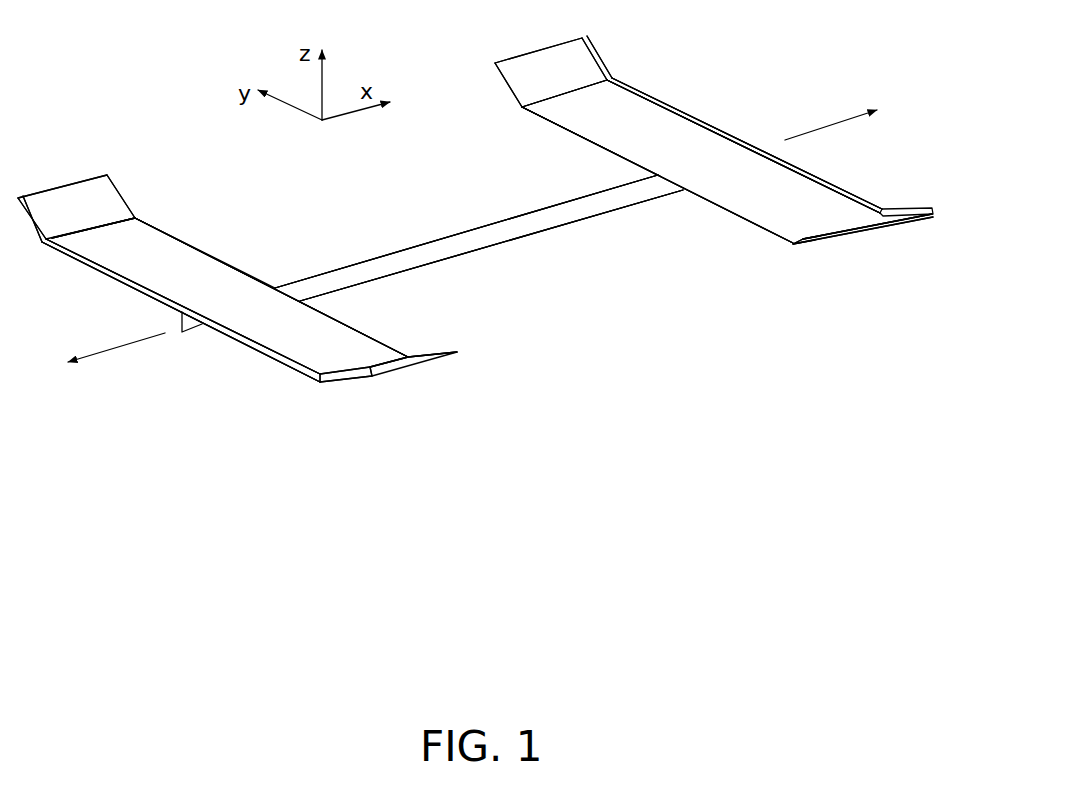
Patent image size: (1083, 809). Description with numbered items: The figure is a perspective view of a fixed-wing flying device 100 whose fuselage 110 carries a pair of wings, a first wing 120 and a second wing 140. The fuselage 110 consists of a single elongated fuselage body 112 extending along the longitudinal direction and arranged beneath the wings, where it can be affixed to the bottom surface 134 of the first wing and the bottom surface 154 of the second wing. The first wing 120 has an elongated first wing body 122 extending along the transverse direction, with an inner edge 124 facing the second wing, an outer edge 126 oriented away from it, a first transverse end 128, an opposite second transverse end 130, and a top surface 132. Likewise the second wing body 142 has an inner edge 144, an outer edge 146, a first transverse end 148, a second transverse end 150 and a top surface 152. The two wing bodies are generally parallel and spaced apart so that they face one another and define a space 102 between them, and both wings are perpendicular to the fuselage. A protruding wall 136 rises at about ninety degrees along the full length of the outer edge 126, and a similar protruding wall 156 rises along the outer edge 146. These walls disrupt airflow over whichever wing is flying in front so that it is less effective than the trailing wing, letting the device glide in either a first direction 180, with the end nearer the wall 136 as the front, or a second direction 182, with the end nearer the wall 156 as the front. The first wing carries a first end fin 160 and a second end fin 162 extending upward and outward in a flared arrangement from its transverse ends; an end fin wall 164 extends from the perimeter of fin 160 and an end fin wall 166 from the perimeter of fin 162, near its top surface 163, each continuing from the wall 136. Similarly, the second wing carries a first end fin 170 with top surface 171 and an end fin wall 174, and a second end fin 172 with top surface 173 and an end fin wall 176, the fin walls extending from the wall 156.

The flying device 100 is at (696, 35).
The space 102 is at (552, 285).
The fuselage 110 is at (487, 220).
The fuselage body 112 is at (421, 246).
The first wing 120 is at (266, 367).
The first wing body 122 is at (345, 309).
The inner edge 124 is at (218, 254).
The outer edge 126 is at (133, 292).
The first transverse end 128 is at (113, 222).
The second transverse end 130 is at (384, 353).
The top surface 132 is at (160, 237).
The bottom surface 134 is at (237, 343).
The protruding wall 136 is at (97, 266).
The second wing 140 is at (721, 219).
The second wing body 142 is at (705, 205).
The inner edge 144 is at (620, 158).
The outer edge 146 is at (688, 122).
The first transverse end 148 is at (525, 110).
The second transverse end 150 is at (800, 240).
The top surface 152 is at (568, 126).
The bottom surface 154 is at (582, 146).
The protruding wall 156 is at (805, 178).
The first end fin 160 is at (120, 187).
The second end fin 162 is at (407, 372).
The top surface 163 is at (86, 190).
The end fin wall 164 is at (30, 221).
The end fin wall 166 is at (342, 379).
The first end fin 170 is at (497, 82).
The top surface 171 is at (528, 62).
The second end fin 172 is at (856, 249).
The top surface 173 is at (872, 226).
The end fin wall 174 is at (595, 50).
The end fin wall 176 is at (905, 208).
The first direction 180 is at (124, 348).
The second direction 182 is at (860, 113).